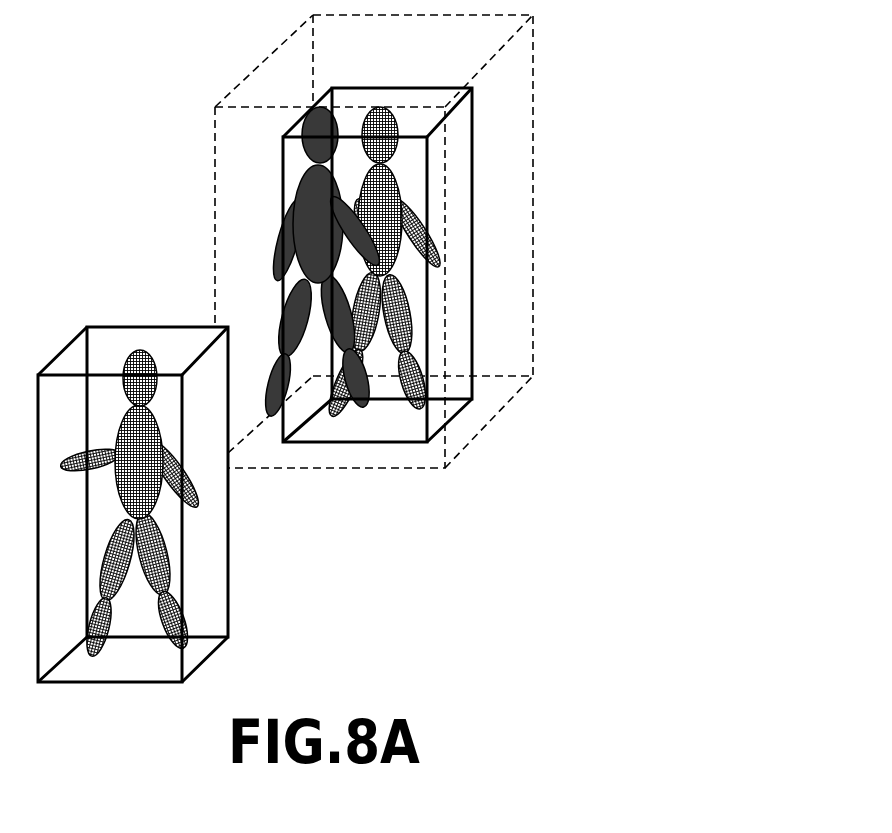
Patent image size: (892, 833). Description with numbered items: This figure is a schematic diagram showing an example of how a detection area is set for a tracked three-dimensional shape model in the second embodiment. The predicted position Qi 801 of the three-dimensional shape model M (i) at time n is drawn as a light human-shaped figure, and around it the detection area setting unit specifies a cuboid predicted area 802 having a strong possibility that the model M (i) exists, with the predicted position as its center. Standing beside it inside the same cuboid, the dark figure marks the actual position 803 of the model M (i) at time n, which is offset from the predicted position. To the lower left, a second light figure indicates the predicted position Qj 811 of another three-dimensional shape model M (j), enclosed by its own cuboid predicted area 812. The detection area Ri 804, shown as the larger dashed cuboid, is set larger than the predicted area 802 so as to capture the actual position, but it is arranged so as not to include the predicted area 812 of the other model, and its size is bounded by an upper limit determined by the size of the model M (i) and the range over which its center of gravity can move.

The predicted position Qi of the three-dimensional shape model M (i) 801 is at (385, 107).
The predicted area of the three-dimensional shape model M (i) 802 is at (472, 267).
The actual position of the three-dimensional shape model M (i) 803 is at (315, 112).
The detection area Ri 804 is at (532, 162).
The predicted position Qj of the three-dimensional shape model M (j) 811 is at (140, 350).
The predicted area of the three-dimensional shape model M (j) 812 is at (228, 573).